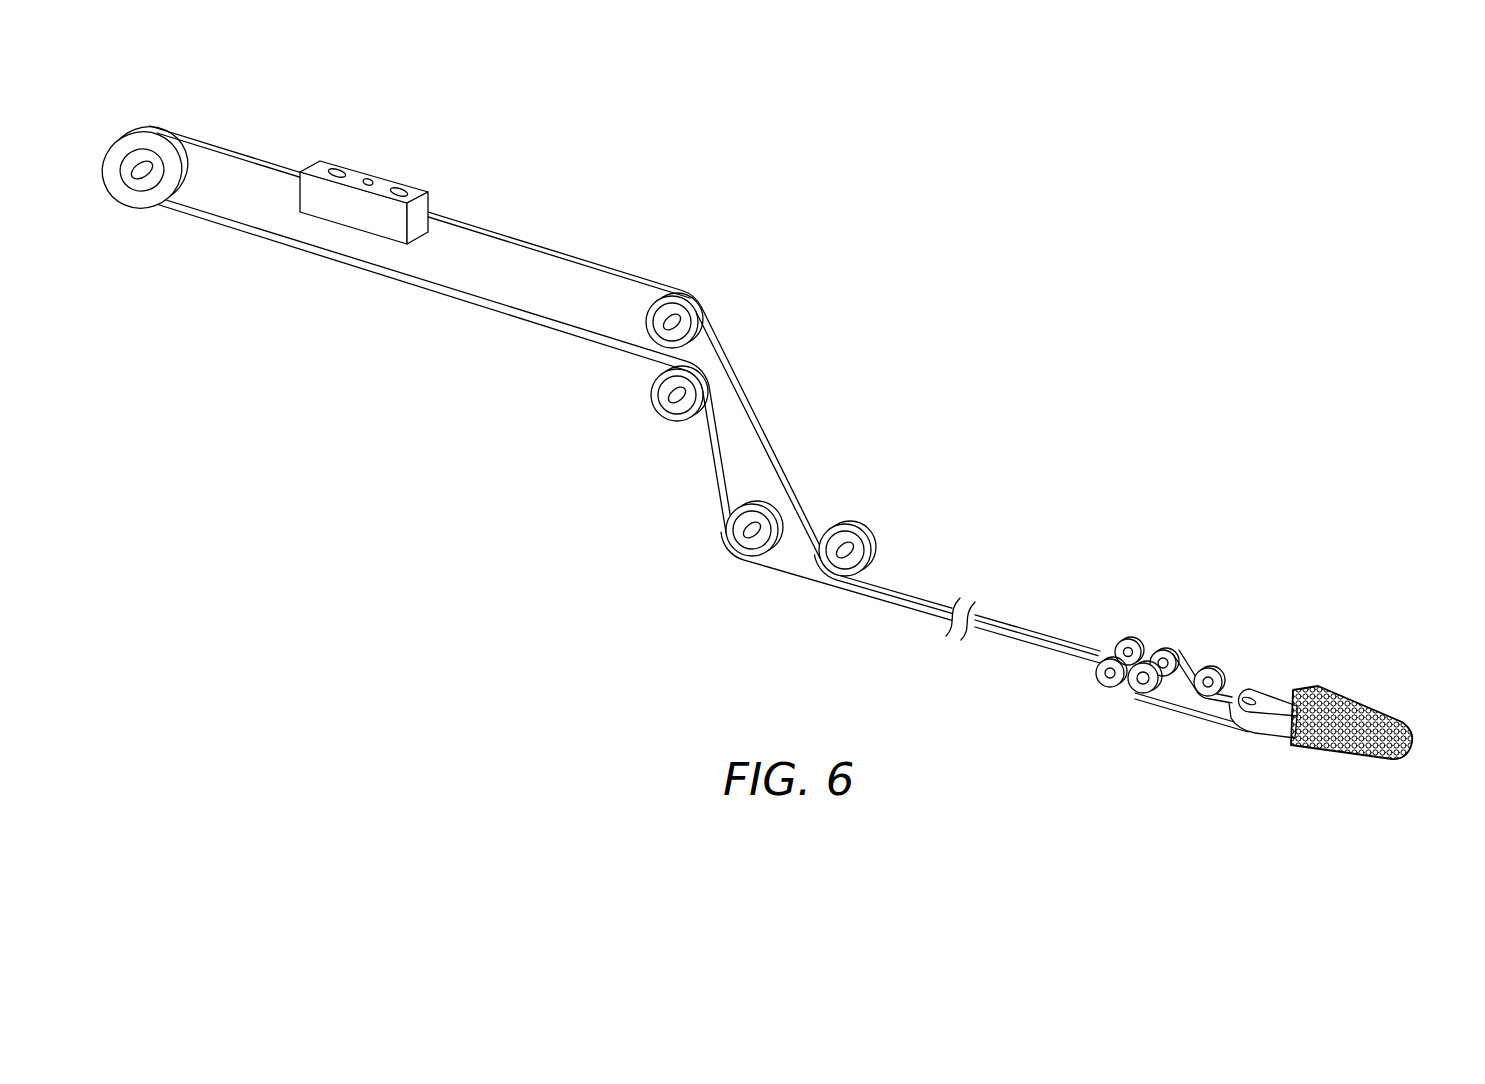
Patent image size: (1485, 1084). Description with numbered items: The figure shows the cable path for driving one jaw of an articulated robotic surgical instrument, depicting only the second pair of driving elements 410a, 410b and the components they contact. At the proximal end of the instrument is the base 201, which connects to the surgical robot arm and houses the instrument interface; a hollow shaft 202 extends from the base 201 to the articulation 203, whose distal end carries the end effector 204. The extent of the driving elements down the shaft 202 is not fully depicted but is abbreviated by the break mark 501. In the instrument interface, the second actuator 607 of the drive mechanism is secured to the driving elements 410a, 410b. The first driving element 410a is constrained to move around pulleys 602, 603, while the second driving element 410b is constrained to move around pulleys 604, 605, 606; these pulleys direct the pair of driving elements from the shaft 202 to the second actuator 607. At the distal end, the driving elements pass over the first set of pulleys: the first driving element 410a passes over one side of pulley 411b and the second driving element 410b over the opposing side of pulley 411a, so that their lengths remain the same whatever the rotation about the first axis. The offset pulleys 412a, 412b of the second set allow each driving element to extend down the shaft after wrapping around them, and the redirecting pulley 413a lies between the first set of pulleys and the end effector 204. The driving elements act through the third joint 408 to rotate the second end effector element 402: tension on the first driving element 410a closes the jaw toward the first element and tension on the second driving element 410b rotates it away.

The base 201 is at (565, 125).
The shaft 202 is at (1062, 527).
The articulation 203 is at (1330, 585).
The end effector 204 is at (1408, 690).
The second end effector element 402 is at (1350, 758).
The third joint 408 is at (1238, 736).
The first driving element 410a is at (556, 257).
The second driving element 410b is at (432, 292).
The pulley 411a is at (1160, 650).
The pulley 411b is at (1138, 692).
The first pulley 412a is at (1125, 640).
The second pulley 412b is at (1096, 680).
The redirecting pulley 413a is at (1222, 678).
The abbreviation 501 is at (978, 592).
The pulley 602 is at (842, 524).
The pulley 603 is at (690, 300).
The pulley 604 is at (735, 556).
The pulley 605 is at (657, 400).
The pulley 606 is at (138, 202).
The second actuator 607 is at (380, 184).